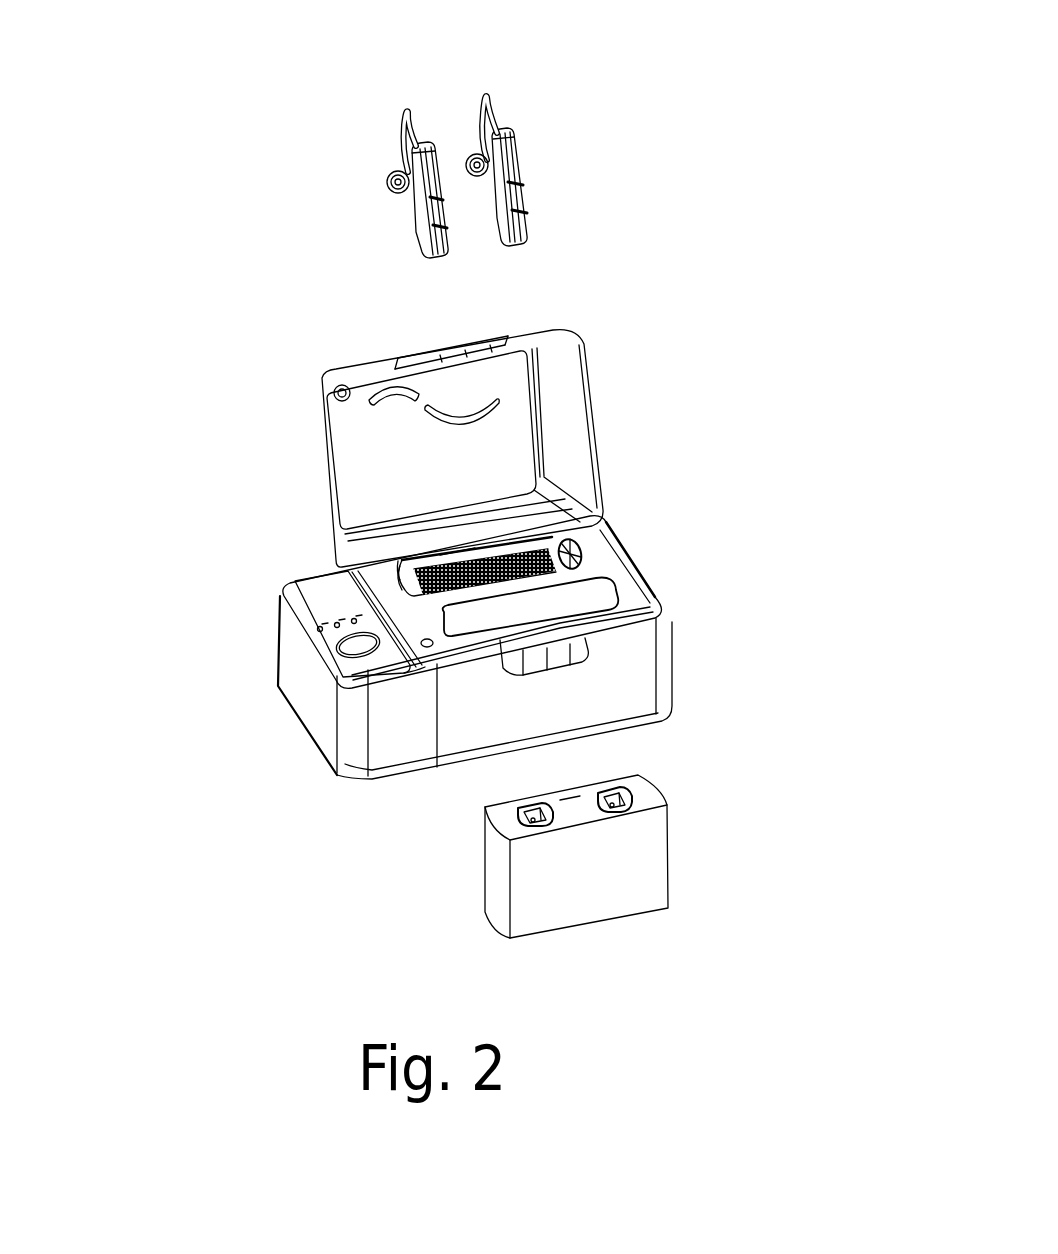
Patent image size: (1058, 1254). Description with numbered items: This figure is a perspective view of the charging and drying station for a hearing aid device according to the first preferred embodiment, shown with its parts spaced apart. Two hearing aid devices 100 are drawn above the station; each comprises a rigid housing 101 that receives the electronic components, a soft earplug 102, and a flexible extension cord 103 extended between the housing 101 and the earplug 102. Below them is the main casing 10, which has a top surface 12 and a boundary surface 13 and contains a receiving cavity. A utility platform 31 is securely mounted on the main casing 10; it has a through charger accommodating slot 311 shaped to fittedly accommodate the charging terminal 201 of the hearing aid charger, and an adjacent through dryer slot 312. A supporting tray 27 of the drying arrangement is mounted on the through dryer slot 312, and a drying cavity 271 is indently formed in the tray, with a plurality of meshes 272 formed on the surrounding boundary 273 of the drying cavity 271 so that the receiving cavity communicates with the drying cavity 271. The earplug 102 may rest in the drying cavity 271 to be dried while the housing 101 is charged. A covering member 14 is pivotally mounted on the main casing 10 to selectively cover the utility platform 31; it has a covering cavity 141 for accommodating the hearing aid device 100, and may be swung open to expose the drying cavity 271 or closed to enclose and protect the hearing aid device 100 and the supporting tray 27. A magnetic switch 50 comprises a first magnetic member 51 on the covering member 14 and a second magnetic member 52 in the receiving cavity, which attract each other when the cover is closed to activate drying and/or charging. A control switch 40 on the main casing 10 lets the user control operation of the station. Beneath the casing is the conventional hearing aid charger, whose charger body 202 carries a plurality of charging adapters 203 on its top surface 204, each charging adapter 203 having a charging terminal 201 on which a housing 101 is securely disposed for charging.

The hearing aid device 100 is at (538, 129).
The housing 101 is at (508, 150).
The earplug 102 is at (472, 156).
The extension cord 103 is at (488, 98).
The main casing 10 is at (480, 630).
The top surface 12 is at (398, 672).
The boundary surface 13 is at (458, 721).
The covering member 14 is at (553, 433).
The covering cavity 141 is at (433, 446).
The supporting tray 27 is at (440, 539).
The drying cavity 271 is at (575, 533).
The meshes 272 is at (405, 592).
The surrounding boundary 273 is at (326, 514).
The utility platform 31 is at (604, 560).
The through charger accommodating slot 311 is at (543, 606).
The through dryer slot 312 is at (402, 566).
The control switch 40 is at (351, 647).
The magnetic switch 50 is at (434, 392).
The first magnetic member 51 is at (381, 363).
The second magnetic member 52 is at (392, 673).
The charging terminal 201 is at (612, 800).
The charger body 202 is at (581, 857).
The charging adapters 203 is at (533, 825).
The top surface 204 is at (570, 805).